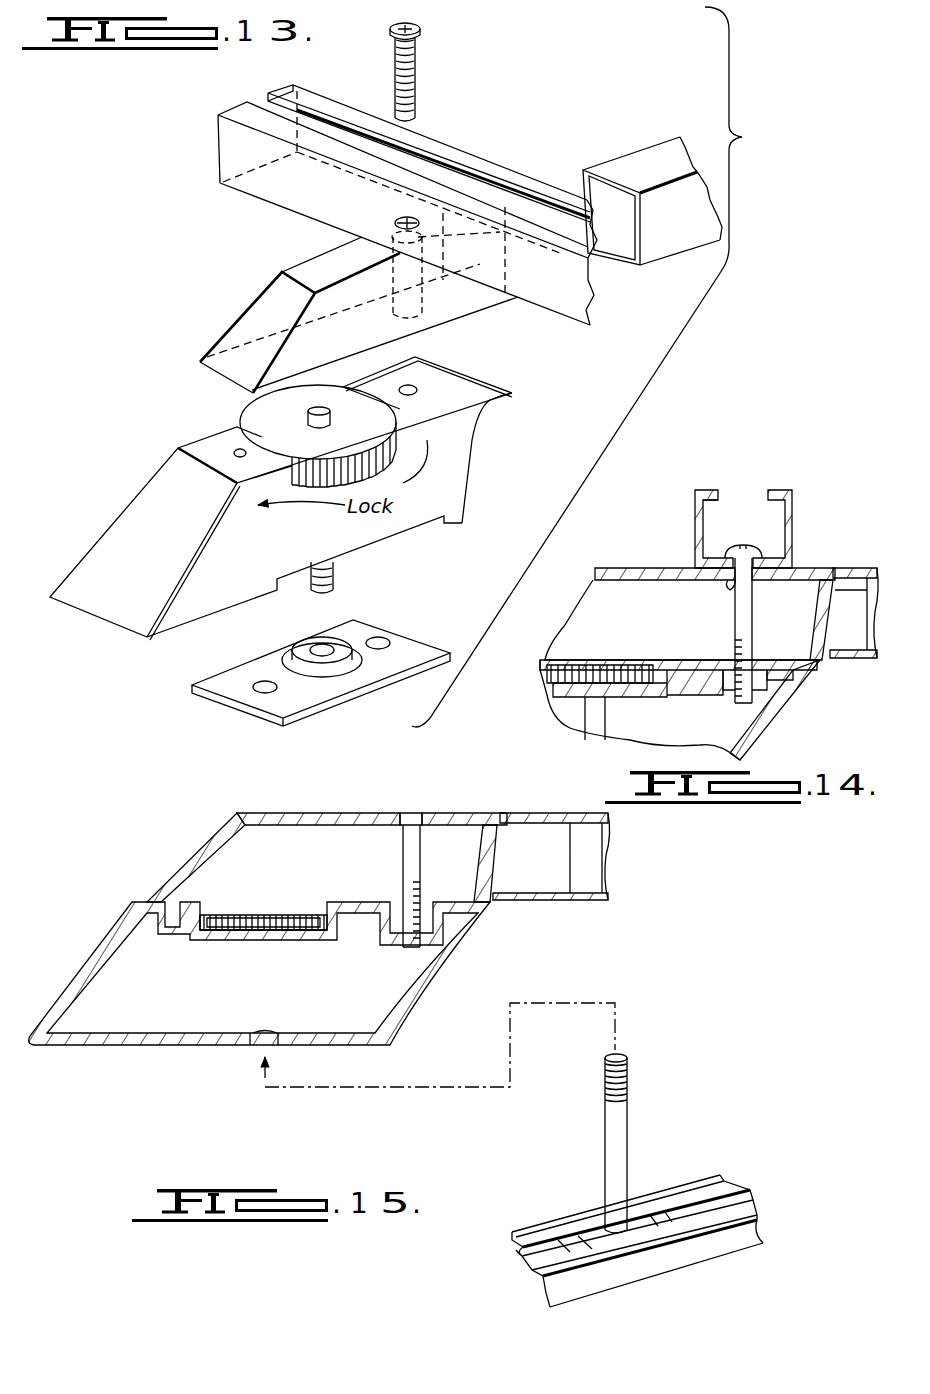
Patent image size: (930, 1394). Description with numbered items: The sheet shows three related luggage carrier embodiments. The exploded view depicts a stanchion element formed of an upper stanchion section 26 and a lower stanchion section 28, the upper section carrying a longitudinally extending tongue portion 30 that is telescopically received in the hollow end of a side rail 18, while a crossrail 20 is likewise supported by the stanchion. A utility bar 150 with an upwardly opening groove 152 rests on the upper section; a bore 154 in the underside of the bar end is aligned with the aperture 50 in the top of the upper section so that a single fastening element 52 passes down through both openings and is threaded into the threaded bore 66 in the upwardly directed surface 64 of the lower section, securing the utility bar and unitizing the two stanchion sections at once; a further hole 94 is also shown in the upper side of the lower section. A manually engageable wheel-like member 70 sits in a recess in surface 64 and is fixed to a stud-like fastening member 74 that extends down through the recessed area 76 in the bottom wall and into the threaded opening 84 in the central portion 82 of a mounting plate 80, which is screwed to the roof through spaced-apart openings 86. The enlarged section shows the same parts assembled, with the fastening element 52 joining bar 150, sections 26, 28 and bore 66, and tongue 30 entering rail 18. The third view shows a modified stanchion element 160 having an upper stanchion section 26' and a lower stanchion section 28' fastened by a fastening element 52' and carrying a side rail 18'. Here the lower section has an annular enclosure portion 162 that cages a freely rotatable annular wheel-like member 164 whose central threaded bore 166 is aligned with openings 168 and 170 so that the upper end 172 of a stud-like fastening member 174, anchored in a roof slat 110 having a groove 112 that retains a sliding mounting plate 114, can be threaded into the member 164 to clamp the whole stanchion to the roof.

In FIG. 13, the side rail 18 is at (652, 183).
In FIG. 14, the side rail 18 is at (854, 632).
In FIG. 13, the crossrail 20 is at (577, 303).
In FIG. 13, the upper stanchion section 26 is at (346, 323).
In FIG. 14, the upper stanchion section 26 is at (690, 582).
In FIG. 13, the lower stanchion section 28 is at (281, 516).
In FIG. 14, the lower stanchion section 28 is at (680, 710).
In FIG. 14, the longitudinally extending tongue portion 30 is at (836, 616).
In FIG. 13, the aperture 50 is at (345, 243).
In FIG. 14, the aperture 50 is at (729, 588).
In FIG. 13, the fastening element 52 is at (433, 72).
In FIG. 14, the fastening element 52 is at (764, 630).
In FIG. 13, the upwardly directed surface 64 is at (467, 387).
In FIG. 13, the threaded bore 66 is at (412, 388).
In FIG. 14, the threaded bore 66 is at (735, 687).
In FIG. 13, the wheel-like member 70 is at (305, 482).
In FIG. 14, the wheel-like member 70 is at (605, 675).
In FIG. 13, the stud-like fastening member 74 is at (334, 568).
In FIG. 14, the stud-like fastening member 74 is at (607, 722).
In FIG. 13, the recessed area 76 is at (412, 528).
In FIG. 13, the mounting plate 80 is at (360, 699).
In FIG. 13, the central portion 82 is at (333, 677).
In FIG. 13, the threaded opening 84 is at (322, 646).
In FIG. 13, the spaced-apart openings 86 is at (380, 640).
In FIG. 13, the hole 94 is at (235, 452).
In FIG. 15, the slat 110 is at (535, 1221).
In FIG. 15, the groove 112 is at (520, 1255).
In FIG. 15, the mounting plate 114 is at (642, 1220).
In FIG. 13, the utility bar 150 is at (478, 150).
In FIG. 14, the utility bar 150 is at (787, 490).
In FIG. 13, the groove 152 is at (513, 193).
In FIG. 14, the groove 152 is at (720, 498).
In FIG. 13, the bore 154 is at (400, 218).
In FIG. 14, the bore 154 is at (753, 550).
In FIG. 15, the stanchion element 160 is at (143, 863).
In FIG. 15, the annular enclosure portion 162 is at (210, 932).
In FIG. 15, the annular wheel-like member 164 is at (318, 910).
In FIG. 15, the central threaded bore 166 is at (268, 909).
In FIG. 15, the opening 168 is at (253, 937).
In FIG. 15, the opening 170 is at (267, 1038).
In FIG. 15, the upper end 172 is at (629, 1071).
In FIG. 15, the stud-like fastening member 174 is at (622, 1127).
In FIG. 15, the upper stanchion section 26' is at (327, 845).
In FIG. 15, the lower stanchion section 28' is at (259, 973).
In FIG. 15, the fastening element 52' is at (431, 858).
In FIG. 15, the side rail 18' is at (551, 834).